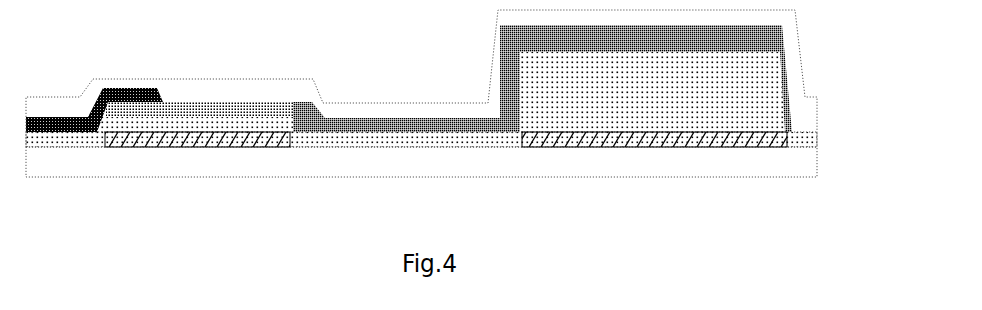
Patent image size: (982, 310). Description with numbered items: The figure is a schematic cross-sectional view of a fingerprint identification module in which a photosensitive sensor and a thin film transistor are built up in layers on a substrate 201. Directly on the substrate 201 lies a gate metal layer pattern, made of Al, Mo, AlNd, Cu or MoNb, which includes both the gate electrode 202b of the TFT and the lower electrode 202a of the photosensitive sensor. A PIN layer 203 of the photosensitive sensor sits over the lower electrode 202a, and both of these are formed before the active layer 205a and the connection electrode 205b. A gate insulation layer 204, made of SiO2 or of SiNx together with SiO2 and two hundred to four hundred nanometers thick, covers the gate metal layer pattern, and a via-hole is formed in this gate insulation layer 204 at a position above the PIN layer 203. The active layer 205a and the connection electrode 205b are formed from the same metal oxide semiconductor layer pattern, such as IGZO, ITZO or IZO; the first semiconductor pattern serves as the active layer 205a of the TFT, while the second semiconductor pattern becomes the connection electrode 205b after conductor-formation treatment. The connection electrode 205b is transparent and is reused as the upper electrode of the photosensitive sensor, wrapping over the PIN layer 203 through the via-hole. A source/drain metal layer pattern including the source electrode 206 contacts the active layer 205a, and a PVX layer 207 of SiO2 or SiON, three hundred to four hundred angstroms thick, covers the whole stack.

The substrate 201 is at (800, 165).
The lower electrode 202a is at (782, 137).
The gate electrode 202b is at (260, 133).
The PIN layer 203 is at (757, 98).
The gate insulation layer 204 is at (385, 137).
The active layer 205a is at (258, 105).
The connection electrode 205b is at (379, 125).
The source electrode 206 is at (125, 97).
The PVX layer 207 is at (218, 93).